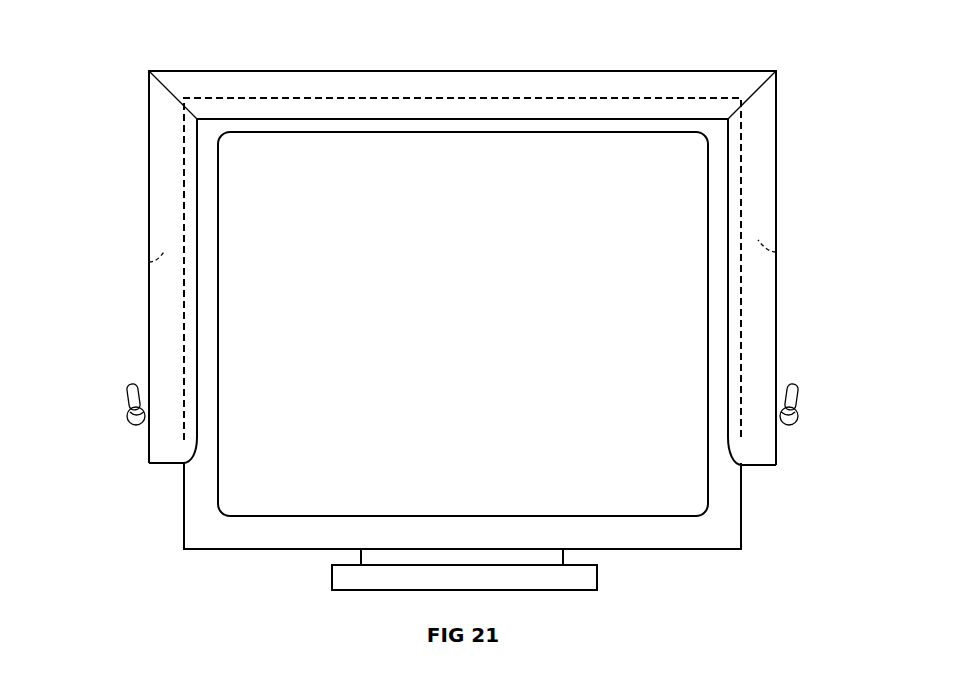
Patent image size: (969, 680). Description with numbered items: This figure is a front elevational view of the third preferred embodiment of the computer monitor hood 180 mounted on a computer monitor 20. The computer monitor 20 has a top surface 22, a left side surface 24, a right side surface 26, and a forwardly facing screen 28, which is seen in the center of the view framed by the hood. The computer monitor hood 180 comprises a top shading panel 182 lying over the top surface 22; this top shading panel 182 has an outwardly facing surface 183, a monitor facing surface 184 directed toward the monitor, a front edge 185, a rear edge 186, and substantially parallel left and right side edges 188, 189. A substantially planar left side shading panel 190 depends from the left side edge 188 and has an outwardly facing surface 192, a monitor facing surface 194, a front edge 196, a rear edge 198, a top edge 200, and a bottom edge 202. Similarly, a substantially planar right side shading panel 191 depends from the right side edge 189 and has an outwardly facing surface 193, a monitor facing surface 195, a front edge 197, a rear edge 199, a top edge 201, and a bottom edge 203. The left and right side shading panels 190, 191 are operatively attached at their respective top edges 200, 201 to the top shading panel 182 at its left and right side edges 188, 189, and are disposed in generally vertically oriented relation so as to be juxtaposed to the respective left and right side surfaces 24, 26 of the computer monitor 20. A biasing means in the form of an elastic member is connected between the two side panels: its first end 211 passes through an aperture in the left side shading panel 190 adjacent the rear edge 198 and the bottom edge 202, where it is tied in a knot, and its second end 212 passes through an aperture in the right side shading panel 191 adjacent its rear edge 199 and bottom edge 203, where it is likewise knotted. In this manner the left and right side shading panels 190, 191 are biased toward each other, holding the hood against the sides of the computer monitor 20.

The computer monitor 20 is at (222, 582).
The top surface 22 is at (455, 98).
The left side surface 24 is at (185, 549).
The right side surface 26 is at (741, 549).
The forwardly facing screen 28 is at (476, 328).
The computer monitor hood 180 is at (602, 85).
The top shading panel 182 is at (522, 85).
The outwardly facing surface 183 is at (366, 71).
The monitor facing surface 184 is at (400, 120).
The front edge 185 is at (578, 119).
The rear edge 186 is at (636, 97).
The left side edge 188 is at (149, 71).
The right side edge 189 is at (776, 71).
The left side shading panel 190 is at (160, 130).
The right side shading panel 191 is at (765, 150).
The outwardly facing surface 192 is at (148, 205).
The outwardly facing surface 193 is at (777, 203).
The monitor facing surface 194 is at (197, 263).
The monitor facing surface 195 is at (728, 272).
The front edge 196 is at (163, 323).
The front edge 197 is at (762, 312).
The rear edge 198 is at (148, 262).
The rear edge 199 is at (777, 252).
The top edge 200 is at (149, 71).
The top edge 201 is at (776, 71).
The bottom edge 202 is at (160, 465).
The bottom edge 203 is at (755, 465).
The first end 211 is at (125, 418).
The second end 212 is at (800, 420).